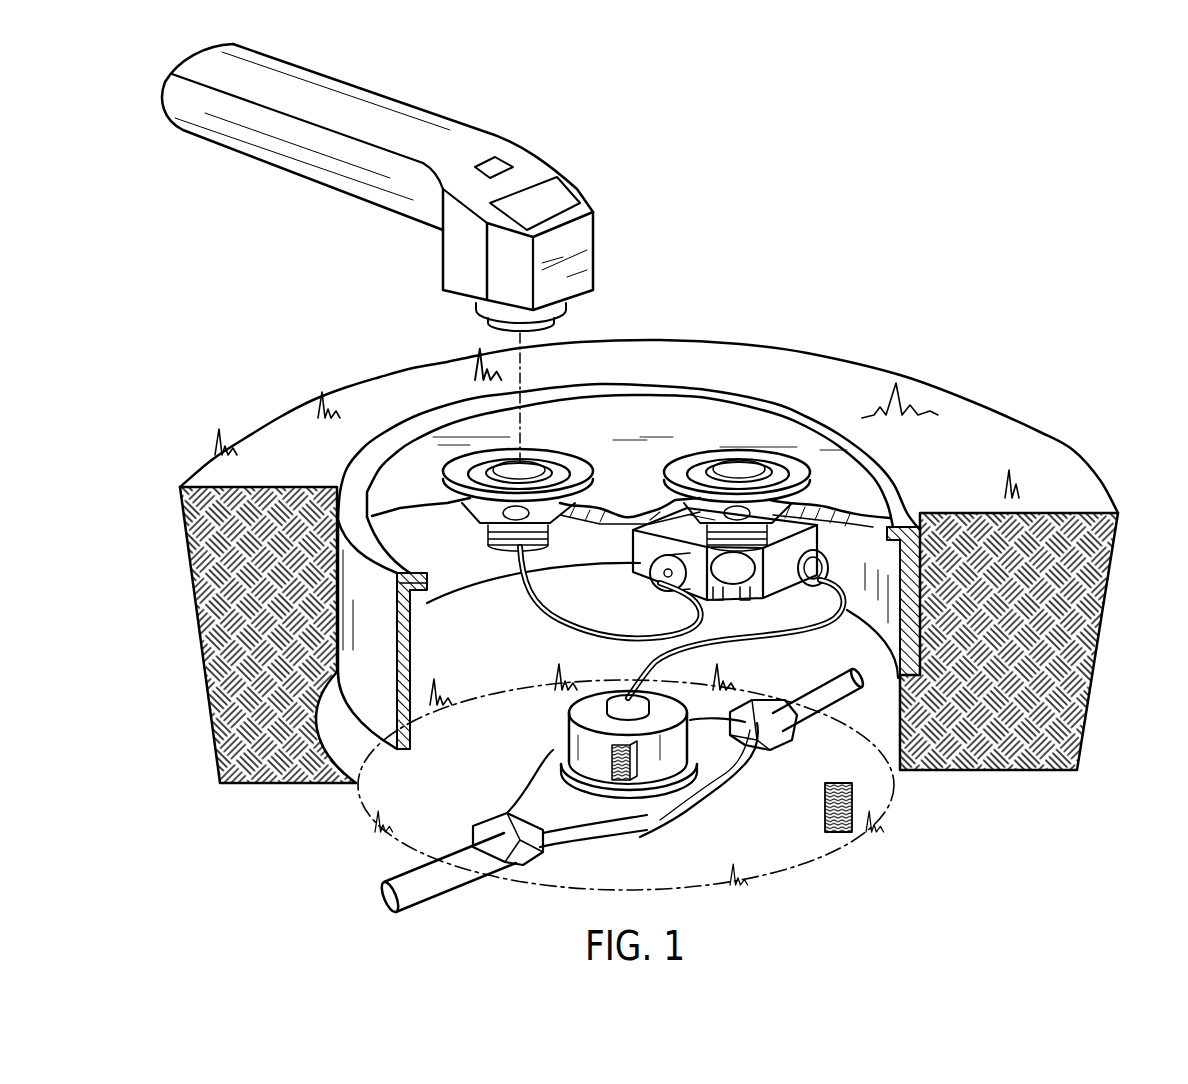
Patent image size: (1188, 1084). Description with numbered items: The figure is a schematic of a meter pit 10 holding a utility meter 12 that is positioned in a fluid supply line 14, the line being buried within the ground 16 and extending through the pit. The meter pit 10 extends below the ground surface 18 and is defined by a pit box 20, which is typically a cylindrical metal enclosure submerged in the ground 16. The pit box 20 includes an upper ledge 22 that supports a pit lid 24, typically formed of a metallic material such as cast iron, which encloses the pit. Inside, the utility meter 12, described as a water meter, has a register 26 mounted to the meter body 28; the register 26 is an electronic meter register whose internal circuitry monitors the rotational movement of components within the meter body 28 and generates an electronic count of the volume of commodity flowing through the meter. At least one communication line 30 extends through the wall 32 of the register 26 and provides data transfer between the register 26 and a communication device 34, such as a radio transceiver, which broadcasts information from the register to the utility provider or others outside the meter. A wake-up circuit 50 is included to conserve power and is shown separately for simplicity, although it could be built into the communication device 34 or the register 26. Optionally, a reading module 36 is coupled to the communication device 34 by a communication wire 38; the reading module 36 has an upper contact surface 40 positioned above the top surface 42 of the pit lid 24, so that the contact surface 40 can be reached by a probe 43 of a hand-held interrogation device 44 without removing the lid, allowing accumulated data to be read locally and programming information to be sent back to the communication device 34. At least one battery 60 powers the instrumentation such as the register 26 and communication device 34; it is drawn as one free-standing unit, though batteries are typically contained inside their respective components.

The meter pit 10 is at (487, 663).
The utility meter 12 is at (740, 777).
The fluid supply line 14 is at (823, 698).
The ground 16 is at (1080, 675).
The ground surface 18 is at (1033, 463).
The pit box 20 is at (410, 750).
The upper ledge 22 is at (423, 593).
The pit lid 24 is at (457, 517).
The register 26 is at (553, 736).
The meter body 28 is at (620, 830).
The communication line 30 is at (690, 643).
The wall 32 is at (595, 702).
The communication device 34 is at (829, 535).
The reading module 36 is at (566, 449).
The communication wire 38 is at (570, 613).
The upper contact surface 40 is at (512, 464).
The top surface 42 is at (390, 467).
The probe 43 is at (557, 323).
The interrogation device 44 is at (480, 140).
The wake-up circuit 50 is at (853, 817).
The battery 60 is at (647, 783).